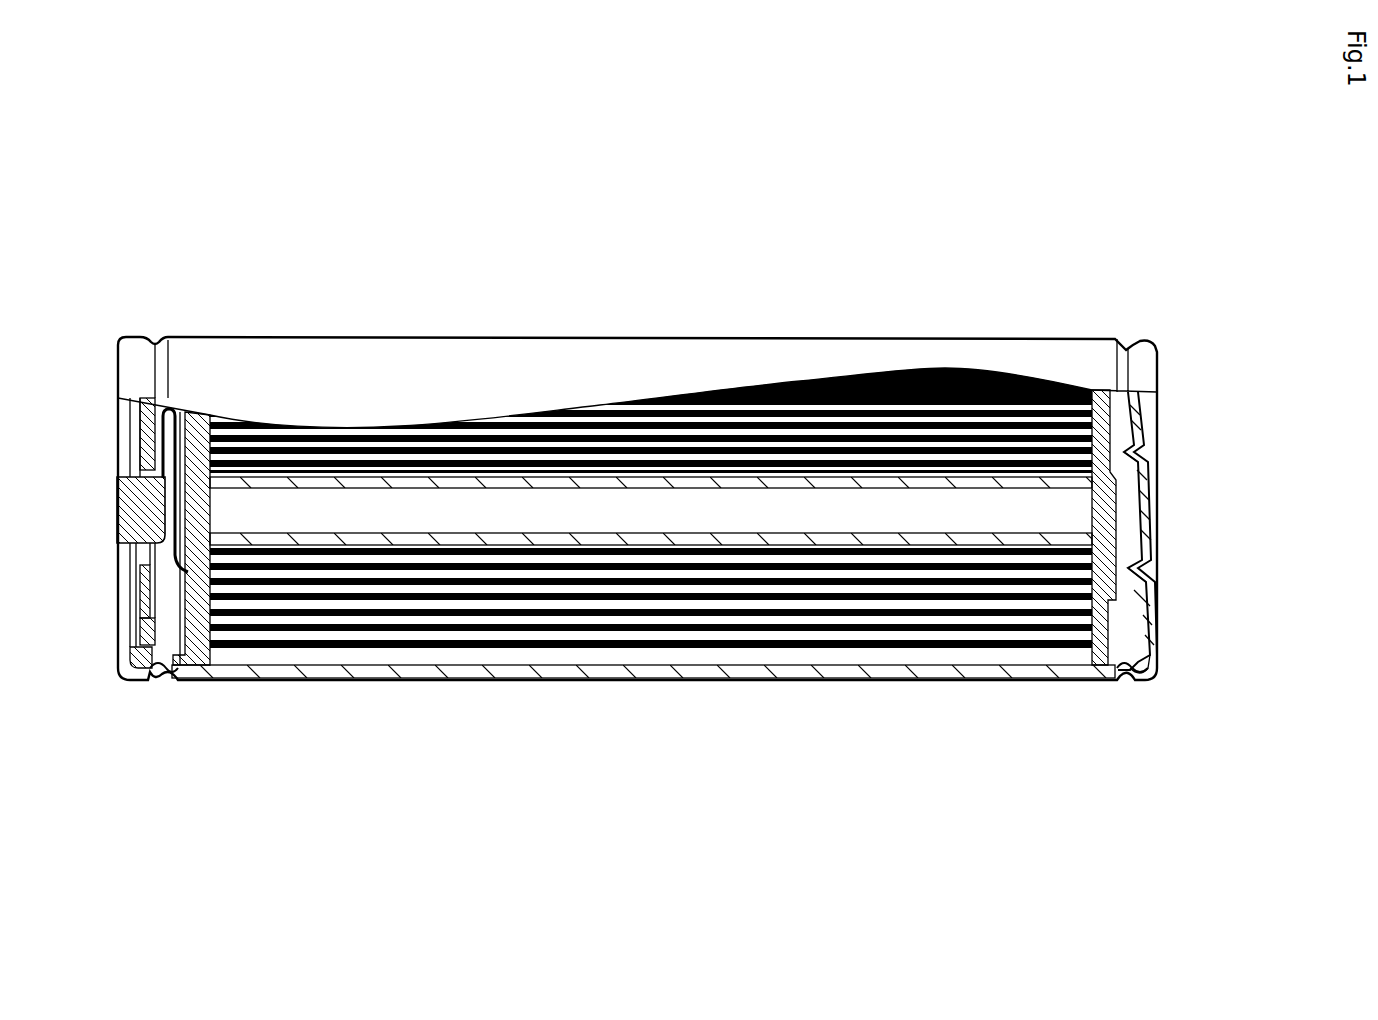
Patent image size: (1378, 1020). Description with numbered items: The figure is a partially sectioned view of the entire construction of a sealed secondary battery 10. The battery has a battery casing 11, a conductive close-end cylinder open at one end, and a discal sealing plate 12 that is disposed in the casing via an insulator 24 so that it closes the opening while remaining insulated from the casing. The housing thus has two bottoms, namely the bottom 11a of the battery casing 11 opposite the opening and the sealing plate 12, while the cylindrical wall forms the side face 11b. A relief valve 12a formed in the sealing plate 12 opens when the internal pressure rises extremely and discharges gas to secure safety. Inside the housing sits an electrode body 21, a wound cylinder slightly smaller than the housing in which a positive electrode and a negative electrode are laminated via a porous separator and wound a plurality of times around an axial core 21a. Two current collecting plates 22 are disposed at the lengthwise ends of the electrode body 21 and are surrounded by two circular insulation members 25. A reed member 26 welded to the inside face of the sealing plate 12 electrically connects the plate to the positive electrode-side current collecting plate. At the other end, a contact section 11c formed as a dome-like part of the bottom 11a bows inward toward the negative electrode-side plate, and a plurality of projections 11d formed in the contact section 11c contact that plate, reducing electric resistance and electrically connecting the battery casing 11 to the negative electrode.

The sealed secondary battery 10 is at (1178, 248).
The battery casing 11 is at (1030, 353).
The bottom 11a is at (1163, 623).
The side face 11b is at (455, 672).
The contact section 11c is at (1158, 432).
The projections 11d is at (1148, 432).
The sealing plate 12 is at (117, 480).
The relief valve 12a is at (140, 588).
The electrode body 21 is at (760, 590).
The axial core 21a is at (685, 545).
The current collecting plates 22 is at (196, 658).
The insulator 24 is at (130, 678).
The insulation members 25 is at (165, 684).
The reed member 26 is at (176, 413).